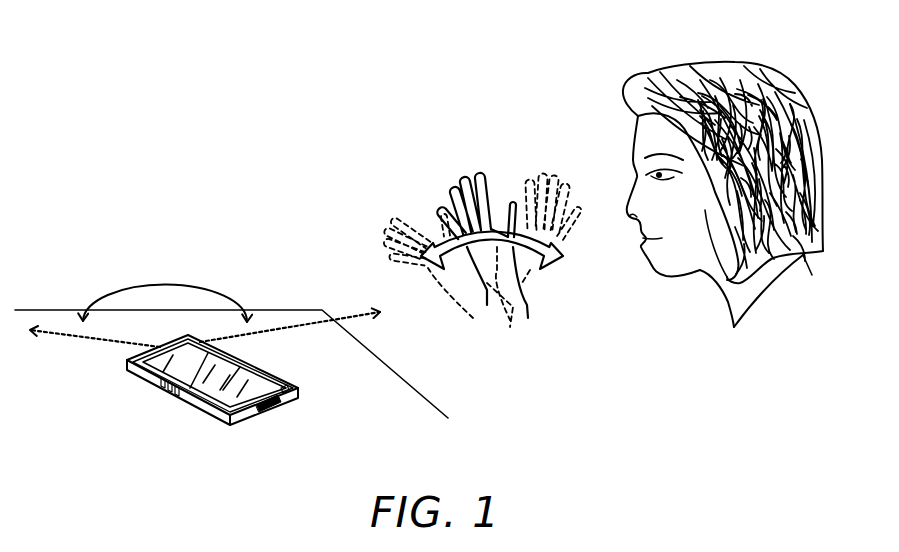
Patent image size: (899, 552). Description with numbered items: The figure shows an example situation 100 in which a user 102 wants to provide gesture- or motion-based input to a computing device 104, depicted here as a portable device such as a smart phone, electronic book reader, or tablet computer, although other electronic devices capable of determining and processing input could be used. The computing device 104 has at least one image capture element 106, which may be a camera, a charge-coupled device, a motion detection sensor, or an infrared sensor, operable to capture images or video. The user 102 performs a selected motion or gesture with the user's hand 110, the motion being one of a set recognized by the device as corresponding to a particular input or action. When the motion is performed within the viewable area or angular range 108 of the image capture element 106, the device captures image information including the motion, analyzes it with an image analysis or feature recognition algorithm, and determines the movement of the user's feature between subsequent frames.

The example situation 100 is at (104, 99).
The user 102 is at (590, 118).
The computing device 104 is at (127, 363).
The image capture element 106 is at (165, 346).
The viewable area or angular range 108 is at (205, 303).
The user's hand 110 is at (408, 185).